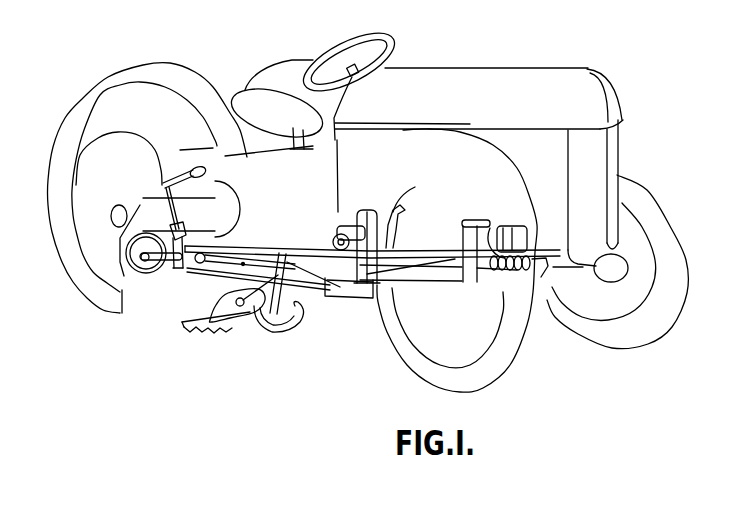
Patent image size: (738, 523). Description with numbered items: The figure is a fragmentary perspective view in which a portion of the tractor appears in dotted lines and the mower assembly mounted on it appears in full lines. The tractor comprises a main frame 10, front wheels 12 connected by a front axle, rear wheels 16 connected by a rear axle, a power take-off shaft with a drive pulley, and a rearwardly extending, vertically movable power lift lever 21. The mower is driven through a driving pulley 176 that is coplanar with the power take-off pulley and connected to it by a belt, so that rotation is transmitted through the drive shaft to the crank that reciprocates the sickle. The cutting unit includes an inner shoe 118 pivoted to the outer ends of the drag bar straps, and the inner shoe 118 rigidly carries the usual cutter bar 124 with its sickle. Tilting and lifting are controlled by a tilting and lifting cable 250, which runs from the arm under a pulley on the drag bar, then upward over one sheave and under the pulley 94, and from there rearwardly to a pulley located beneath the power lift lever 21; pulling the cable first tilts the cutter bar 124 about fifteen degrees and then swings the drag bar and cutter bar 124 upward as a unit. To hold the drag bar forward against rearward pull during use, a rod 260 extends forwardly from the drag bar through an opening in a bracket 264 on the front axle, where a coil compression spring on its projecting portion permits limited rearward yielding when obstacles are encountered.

The main frame 10 is at (620, 157).
The front wheels 12 is at (661, 336).
The rear wheels 16 is at (49, 238).
The power lift lever 21 is at (190, 172).
The pulley 94 is at (333, 236).
The inner shoe 118 is at (264, 320).
The cutter bar 124 is at (190, 321).
The driving pulley 176 is at (149, 274).
The tilting and lifting cable 250 is at (273, 245).
The rod 260 is at (443, 270).
The bracket 264 is at (508, 224).